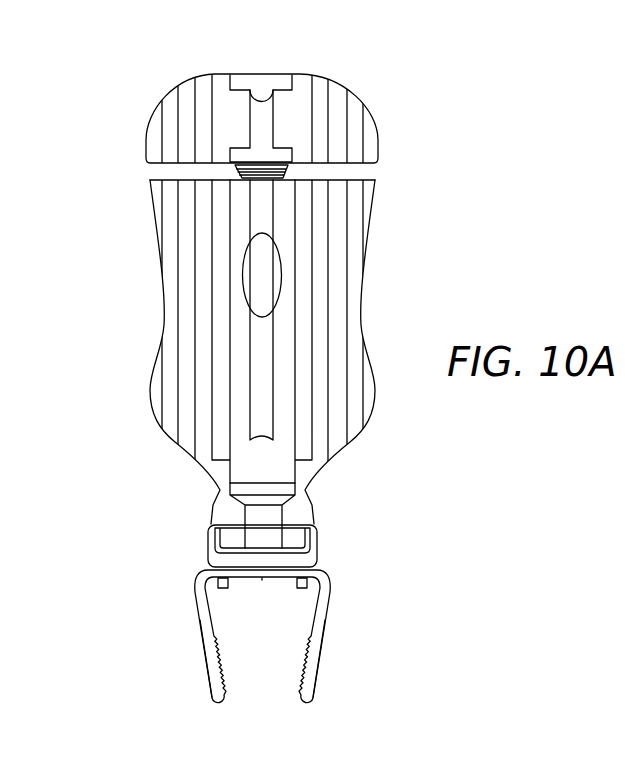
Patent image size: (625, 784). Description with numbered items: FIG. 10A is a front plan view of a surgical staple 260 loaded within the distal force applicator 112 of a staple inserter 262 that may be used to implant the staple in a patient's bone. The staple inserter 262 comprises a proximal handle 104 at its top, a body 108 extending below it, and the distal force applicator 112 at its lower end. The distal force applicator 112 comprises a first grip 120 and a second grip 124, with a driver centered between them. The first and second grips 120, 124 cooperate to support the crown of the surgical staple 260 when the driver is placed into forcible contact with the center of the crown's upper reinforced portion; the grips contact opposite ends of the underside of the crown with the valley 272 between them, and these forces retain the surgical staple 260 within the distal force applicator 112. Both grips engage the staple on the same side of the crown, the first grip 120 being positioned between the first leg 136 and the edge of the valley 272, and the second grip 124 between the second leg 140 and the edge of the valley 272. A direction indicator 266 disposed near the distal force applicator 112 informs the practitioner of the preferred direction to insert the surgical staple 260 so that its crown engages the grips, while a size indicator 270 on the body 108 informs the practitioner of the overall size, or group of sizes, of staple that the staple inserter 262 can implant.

The proximal handle 104 is at (170, 97).
The body 108 is at (360, 260).
The distal force applicator 112 is at (320, 563).
The first grip 120 is at (223, 590).
The second grip 124 is at (302, 590).
The first leg 136 is at (200, 648).
The second leg 140 is at (328, 633).
The surgical staple 260 is at (315, 702).
The staple inserter 262 is at (296, 53).
The direction indicator 266 is at (207, 545).
The size indicator 270 is at (255, 263).
The valley 272 is at (260, 578).